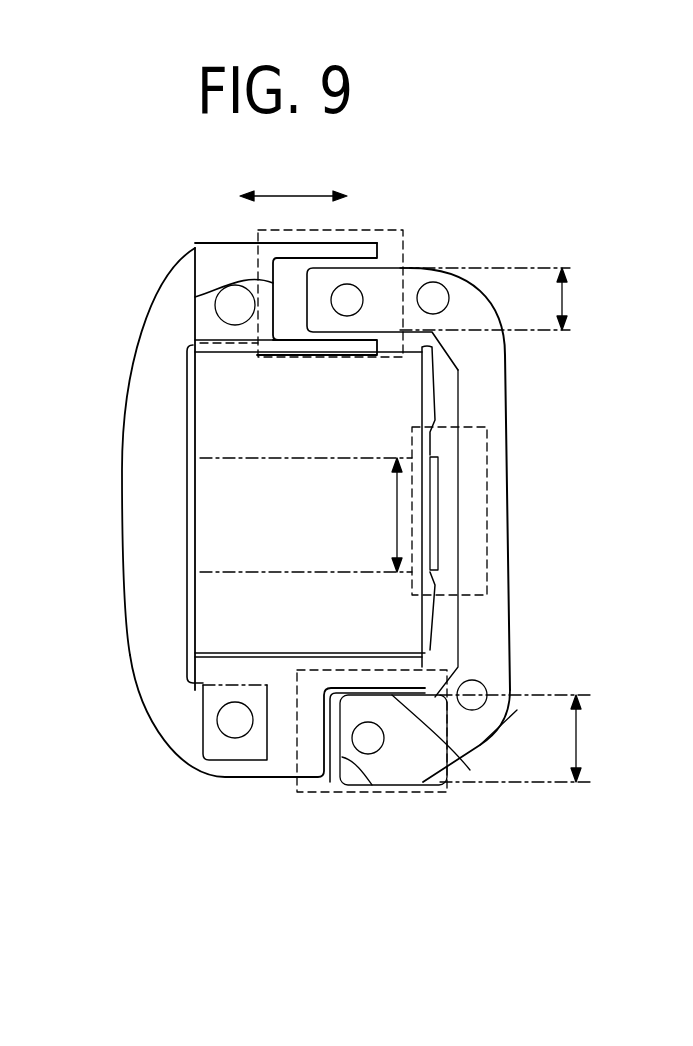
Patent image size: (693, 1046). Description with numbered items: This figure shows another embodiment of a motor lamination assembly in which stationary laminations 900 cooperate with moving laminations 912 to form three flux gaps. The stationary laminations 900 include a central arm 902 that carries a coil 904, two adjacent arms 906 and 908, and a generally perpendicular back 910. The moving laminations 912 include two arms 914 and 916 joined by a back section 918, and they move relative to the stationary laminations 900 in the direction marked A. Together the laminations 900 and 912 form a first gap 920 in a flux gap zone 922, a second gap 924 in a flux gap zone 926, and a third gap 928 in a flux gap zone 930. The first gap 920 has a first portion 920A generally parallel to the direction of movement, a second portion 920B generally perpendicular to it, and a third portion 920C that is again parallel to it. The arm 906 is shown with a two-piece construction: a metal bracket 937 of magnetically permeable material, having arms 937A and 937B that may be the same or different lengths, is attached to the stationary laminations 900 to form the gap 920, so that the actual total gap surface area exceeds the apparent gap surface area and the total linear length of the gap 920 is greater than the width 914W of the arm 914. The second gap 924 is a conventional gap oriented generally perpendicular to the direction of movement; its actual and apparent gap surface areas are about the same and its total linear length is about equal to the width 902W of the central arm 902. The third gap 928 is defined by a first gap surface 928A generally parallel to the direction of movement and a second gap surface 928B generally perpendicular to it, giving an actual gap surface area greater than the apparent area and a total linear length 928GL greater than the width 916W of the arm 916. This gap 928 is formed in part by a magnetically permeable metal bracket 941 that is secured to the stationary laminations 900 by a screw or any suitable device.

The stationary laminations 900 is at (112, 662).
The central arm 902 is at (250, 505).
The width of arm 902 902W is at (410, 540).
The coil 904 is at (215, 607).
The adjacent arm 906 is at (203, 278).
The adjacent arm 908 is at (220, 777).
The back 910 is at (140, 548).
The moving laminations 912 is at (520, 655).
The arm 914 is at (390, 283).
The width 914W is at (565, 300).
The arm 916 is at (417, 777).
The width 916W is at (578, 730).
The back section 918 is at (487, 402).
The first gap 920 is at (200, 297).
The first portion of gap 920 920A is at (326, 250).
The second portion of gap 920 920B is at (290, 312).
The third portion of gap 920 920C is at (312, 345).
The flux gap zone 922 is at (258, 232).
The second gap 924 is at (445, 470).
The flux gap zone 926 is at (487, 585).
The third gap 928 is at (347, 760).
The first gap surface 928A is at (470, 770).
The second gap surface 928B is at (372, 785).
The total linear length of gap 928 928GL is at (330, 693).
The flux gap zone 930 is at (310, 793).
The metal bracket 937 is at (195, 248).
The arm of bracket 937 937A is at (360, 245).
The arm of bracket 937 937B is at (380, 382).
The metal bracket 941 is at (210, 698).